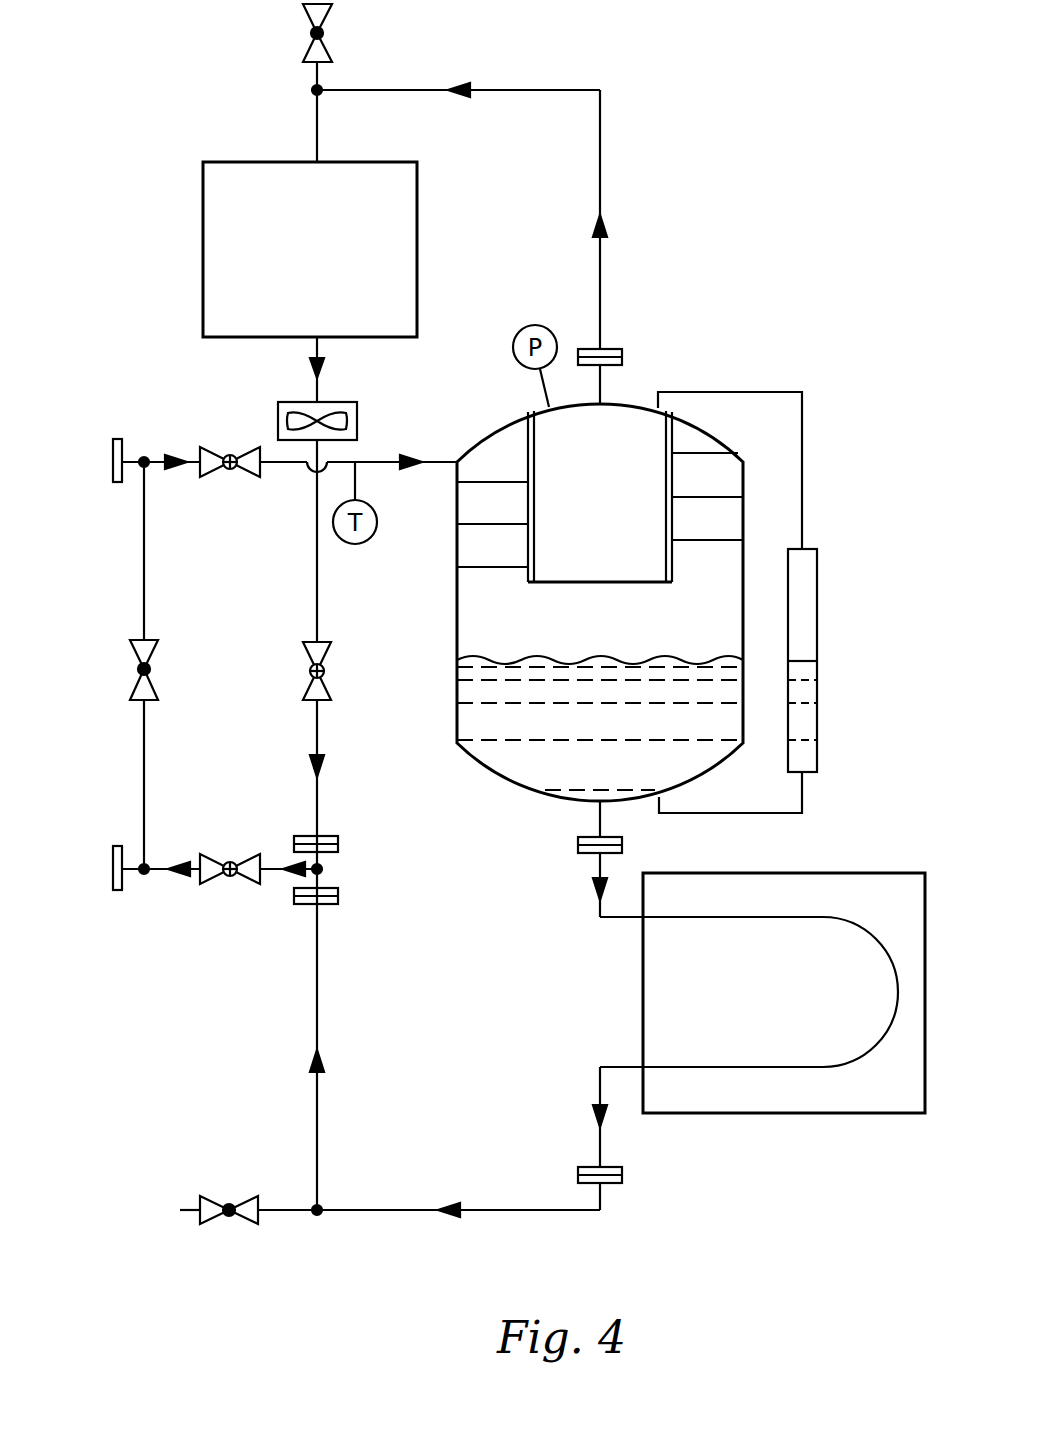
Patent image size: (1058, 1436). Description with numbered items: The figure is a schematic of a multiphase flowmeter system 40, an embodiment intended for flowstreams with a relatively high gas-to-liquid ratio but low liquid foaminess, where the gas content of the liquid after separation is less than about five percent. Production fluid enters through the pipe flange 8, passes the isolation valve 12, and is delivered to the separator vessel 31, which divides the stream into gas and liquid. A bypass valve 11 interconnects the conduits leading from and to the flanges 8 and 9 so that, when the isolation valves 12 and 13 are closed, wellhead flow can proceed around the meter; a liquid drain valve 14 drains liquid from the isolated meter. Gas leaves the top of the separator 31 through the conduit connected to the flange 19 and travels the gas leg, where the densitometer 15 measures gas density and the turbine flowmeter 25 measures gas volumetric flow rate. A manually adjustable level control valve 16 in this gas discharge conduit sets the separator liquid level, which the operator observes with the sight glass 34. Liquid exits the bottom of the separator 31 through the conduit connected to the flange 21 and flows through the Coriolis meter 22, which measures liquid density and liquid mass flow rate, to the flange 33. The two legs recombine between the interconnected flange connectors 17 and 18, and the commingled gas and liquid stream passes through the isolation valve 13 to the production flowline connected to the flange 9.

The pipe flange 8 is at (116, 439).
The pipe flange 9 is at (116, 846).
The bypass valve 11 is at (138, 640).
The isolation valve 12 is at (250, 477).
The isolation valve 13 is at (210, 854).
The liquid drain valve 14 is at (212, 1224).
The densitometer 15 is at (244, 162).
The level control valve 16 is at (308, 642).
The flange connector 17 is at (338, 844).
The flange connector 18 is at (338, 896).
The flange 19 is at (622, 353).
The flange 21 is at (622, 845).
The Coriolis meter 22 is at (878, 873).
The turbine flowmeter 25 is at (345, 402).
The separator vessel 31 is at (455, 616).
The flange 33 is at (606, 1183).
The sight glass 34 is at (820, 608).
The multiphase flowmeter system 40 is at (792, 210).